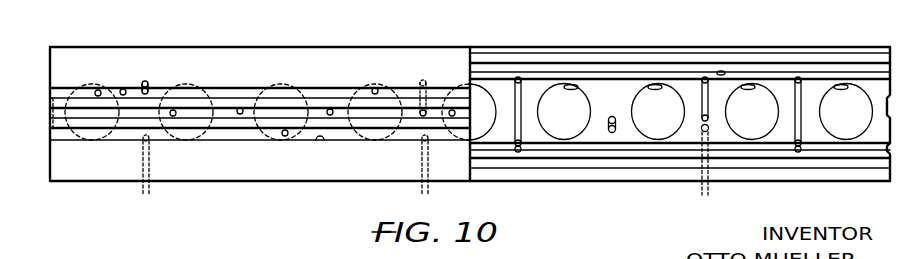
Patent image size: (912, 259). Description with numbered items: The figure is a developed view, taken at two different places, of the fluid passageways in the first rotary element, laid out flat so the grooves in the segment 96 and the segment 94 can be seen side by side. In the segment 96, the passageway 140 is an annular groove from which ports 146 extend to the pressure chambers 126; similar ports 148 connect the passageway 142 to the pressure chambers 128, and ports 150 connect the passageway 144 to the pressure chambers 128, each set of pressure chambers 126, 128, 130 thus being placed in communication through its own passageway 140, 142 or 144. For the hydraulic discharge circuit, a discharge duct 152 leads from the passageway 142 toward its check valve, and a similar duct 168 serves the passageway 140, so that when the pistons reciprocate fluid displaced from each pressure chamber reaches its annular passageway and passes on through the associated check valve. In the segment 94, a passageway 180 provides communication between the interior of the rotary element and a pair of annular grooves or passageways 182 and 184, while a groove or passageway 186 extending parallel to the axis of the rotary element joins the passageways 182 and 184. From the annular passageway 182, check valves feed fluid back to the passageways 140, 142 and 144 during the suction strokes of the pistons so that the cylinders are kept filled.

The segment 94 is at (598, 48).
The segment 96 is at (203, 52).
The pressure chambers 126 is at (179, 142).
The pressure chambers 128 is at (84, 141).
The pressure chambers 130 is at (293, 139).
The passageway 140 is at (242, 108).
The passageway 142 is at (123, 89).
The passageway 144 is at (320, 141).
The ports 146 is at (176, 111).
The ports 148 is at (95, 92).
The ports 150 is at (282, 135).
The discharge duct 152 is at (149, 87).
The duct 168 is at (616, 126).
The passageway 180 is at (519, 152).
The annular groove or passageway 182 is at (614, 149).
The annular groove or passageway 184 is at (723, 72).
The groove or passageway 186 is at (518, 106).